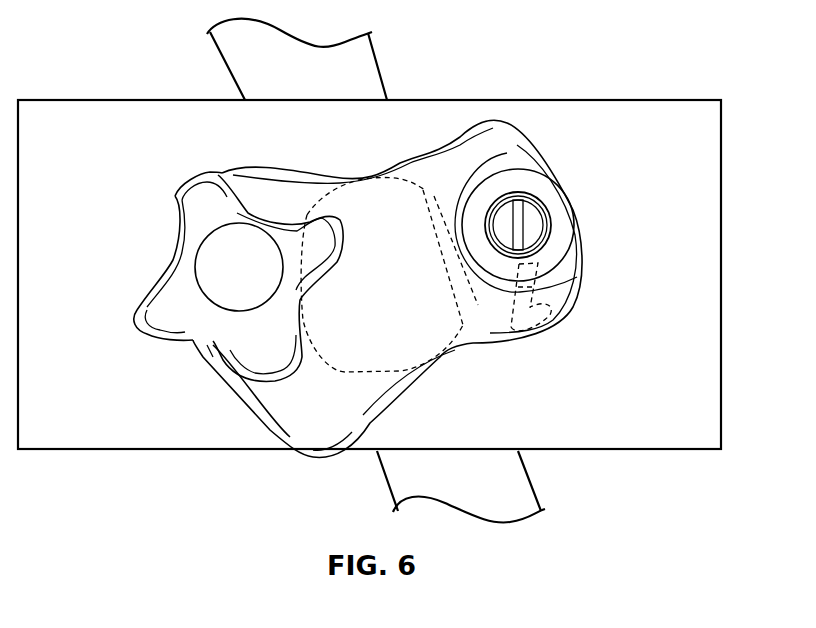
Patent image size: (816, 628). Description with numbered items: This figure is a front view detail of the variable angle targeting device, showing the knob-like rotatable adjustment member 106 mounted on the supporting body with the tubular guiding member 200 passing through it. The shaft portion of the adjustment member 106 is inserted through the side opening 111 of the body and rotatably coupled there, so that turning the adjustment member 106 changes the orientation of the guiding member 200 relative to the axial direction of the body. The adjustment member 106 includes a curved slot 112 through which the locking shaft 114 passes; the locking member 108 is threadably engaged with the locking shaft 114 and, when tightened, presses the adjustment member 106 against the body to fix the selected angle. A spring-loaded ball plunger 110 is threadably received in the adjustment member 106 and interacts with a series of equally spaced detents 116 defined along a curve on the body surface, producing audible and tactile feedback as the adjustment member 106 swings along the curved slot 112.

The rotatable adjustment member 106 is at (308, 440).
The locking member 108 is at (150, 314).
The spring-loaded ball plunger 110 is at (532, 226).
The side opening 111 is at (408, 182).
The curved slot 112 is at (250, 390).
The locking shaft 114 is at (212, 272).
The detents 116 is at (558, 325).
The tubular guiding member 200 is at (243, 52).